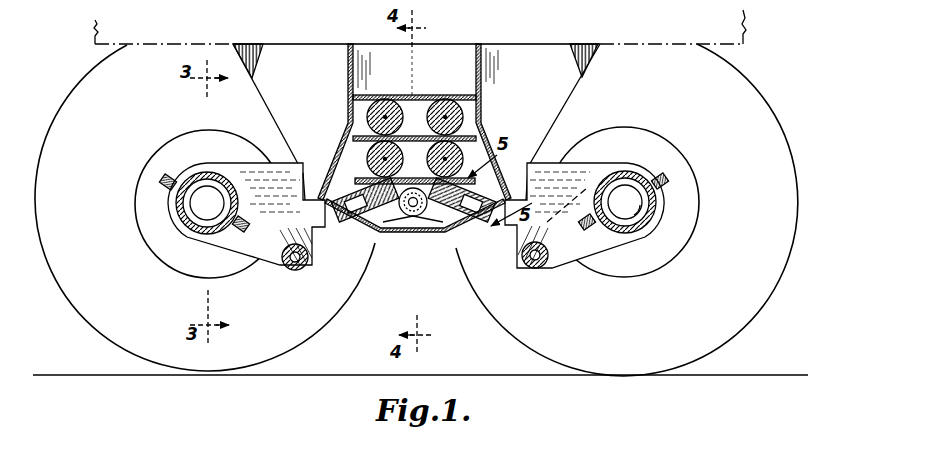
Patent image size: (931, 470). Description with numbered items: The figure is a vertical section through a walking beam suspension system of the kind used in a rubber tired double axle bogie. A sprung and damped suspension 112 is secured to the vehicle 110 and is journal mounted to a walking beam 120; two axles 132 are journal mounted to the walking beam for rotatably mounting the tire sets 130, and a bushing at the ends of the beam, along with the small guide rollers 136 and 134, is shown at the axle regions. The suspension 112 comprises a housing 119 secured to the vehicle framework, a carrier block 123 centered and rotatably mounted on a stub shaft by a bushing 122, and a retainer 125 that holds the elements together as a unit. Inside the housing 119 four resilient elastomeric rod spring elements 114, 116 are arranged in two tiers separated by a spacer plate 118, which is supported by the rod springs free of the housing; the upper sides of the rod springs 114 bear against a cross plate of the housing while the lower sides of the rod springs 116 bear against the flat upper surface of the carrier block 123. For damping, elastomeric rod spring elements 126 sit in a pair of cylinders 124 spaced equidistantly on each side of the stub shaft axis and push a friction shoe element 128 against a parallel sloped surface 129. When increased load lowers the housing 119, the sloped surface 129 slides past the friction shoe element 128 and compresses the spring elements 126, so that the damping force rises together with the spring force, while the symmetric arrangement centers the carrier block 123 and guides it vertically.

The vehicle 110 is at (513, 40).
The sprung and damped suspension 112 is at (345, 70).
The rod spring elements 114 is at (400, 96).
The rod spring elements 116 is at (477, 150).
The spacer plate 118 is at (356, 128).
The housing 119 is at (483, 115).
The walking beam 120 is at (622, 163).
The bushing 122 is at (396, 234).
The carrier block 123 is at (410, 236).
The cylinders 124 is at (358, 234).
The retainer 125 is at (386, 236).
The elastomeric rod spring elements 126 is at (432, 236).
The friction shoe element 128 is at (552, 160).
The sloped surface 129 is at (345, 157).
The tire sets 130 is at (757, 88).
The axles 132 is at (176, 214).
The axle bushing 134 is at (650, 218).
The guide roller 136 is at (294, 271).